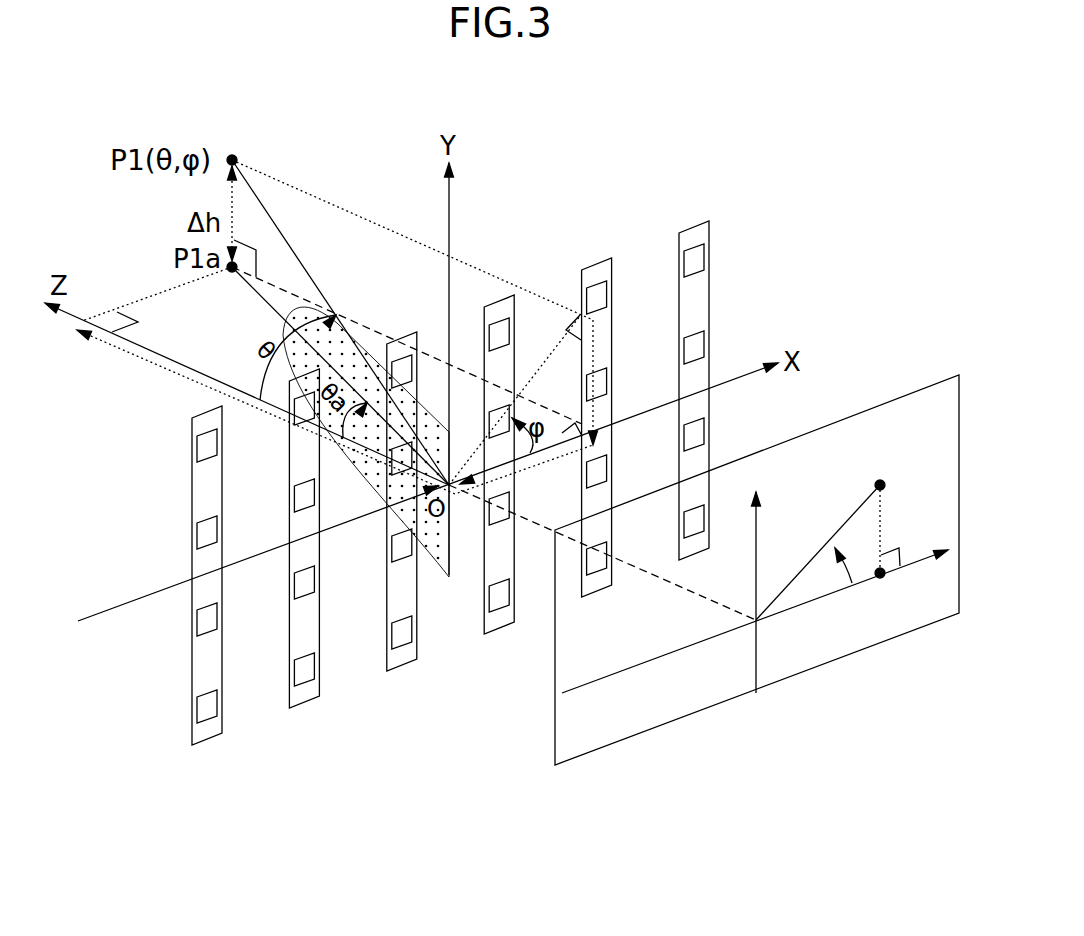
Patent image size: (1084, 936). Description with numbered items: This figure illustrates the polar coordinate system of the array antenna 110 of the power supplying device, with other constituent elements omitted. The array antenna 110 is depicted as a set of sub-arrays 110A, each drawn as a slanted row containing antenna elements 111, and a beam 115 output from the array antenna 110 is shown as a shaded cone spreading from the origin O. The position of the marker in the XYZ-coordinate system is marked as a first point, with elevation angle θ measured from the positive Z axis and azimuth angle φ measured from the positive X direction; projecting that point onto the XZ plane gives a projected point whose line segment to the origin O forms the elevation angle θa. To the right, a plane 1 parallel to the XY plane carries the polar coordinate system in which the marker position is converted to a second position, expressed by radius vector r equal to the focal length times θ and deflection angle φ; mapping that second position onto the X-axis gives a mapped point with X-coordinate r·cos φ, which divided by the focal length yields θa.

The plane 1 is at (898, 418).
The array antenna 110 is at (410, 513).
The sub-array 110A is at (195, 606).
The antenna element 111 is at (207, 708).
The beam 115 is at (360, 471).